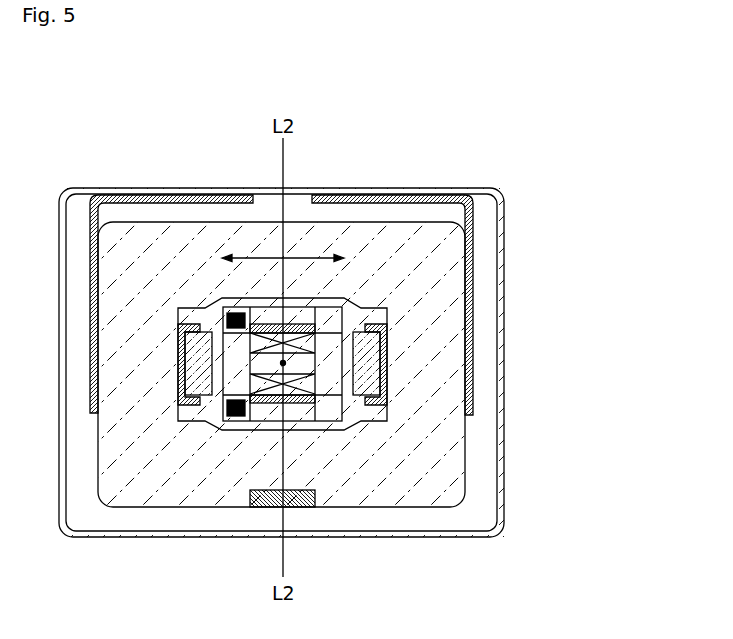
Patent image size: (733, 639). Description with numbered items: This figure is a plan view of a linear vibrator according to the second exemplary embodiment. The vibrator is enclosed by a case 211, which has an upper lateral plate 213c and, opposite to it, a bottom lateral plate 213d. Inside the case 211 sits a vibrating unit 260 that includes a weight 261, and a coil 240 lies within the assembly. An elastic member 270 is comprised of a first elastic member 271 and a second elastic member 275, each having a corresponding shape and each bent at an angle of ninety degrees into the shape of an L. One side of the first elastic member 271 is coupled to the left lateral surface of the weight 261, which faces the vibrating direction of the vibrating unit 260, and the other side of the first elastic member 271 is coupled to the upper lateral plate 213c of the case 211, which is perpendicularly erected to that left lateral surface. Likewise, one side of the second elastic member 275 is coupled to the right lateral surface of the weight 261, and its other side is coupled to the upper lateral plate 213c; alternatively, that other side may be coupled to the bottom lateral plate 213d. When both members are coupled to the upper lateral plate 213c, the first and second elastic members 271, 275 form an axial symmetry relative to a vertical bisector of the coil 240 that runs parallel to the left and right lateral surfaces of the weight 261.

The case 211 is at (66, 537).
The upper lateral plate 213c is at (108, 190).
The bottom lateral plate 213d is at (433, 538).
The coil 240 is at (309, 374).
The vibrating unit 260 is at (395, 419).
The weight 261 is at (442, 400).
The elastic member 270 is at (281, 225).
The first elastic member 271 is at (212, 192).
The second elastic member 275 is at (325, 190).